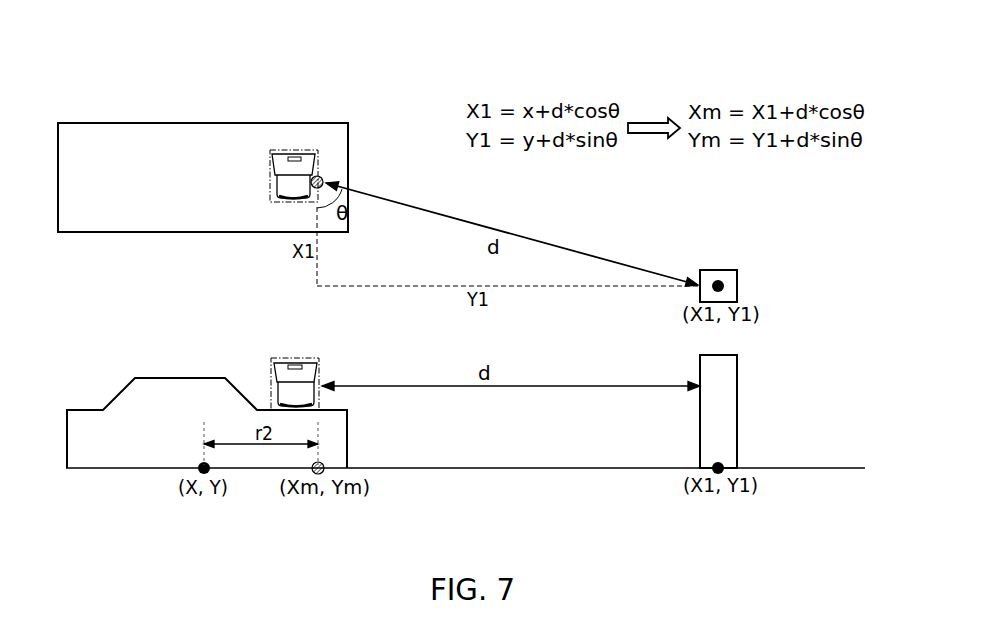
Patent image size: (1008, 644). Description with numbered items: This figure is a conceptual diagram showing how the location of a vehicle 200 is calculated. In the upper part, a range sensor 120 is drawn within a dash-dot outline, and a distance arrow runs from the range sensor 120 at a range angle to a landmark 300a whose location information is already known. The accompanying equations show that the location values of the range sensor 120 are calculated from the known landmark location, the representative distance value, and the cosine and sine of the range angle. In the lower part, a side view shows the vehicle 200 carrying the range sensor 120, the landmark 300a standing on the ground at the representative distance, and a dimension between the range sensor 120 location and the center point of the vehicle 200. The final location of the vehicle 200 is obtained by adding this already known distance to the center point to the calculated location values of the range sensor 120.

The range sensor 120 is at (270, 164).
The vehicle 200 is at (183, 378).
The landmark 300a is at (737, 283).